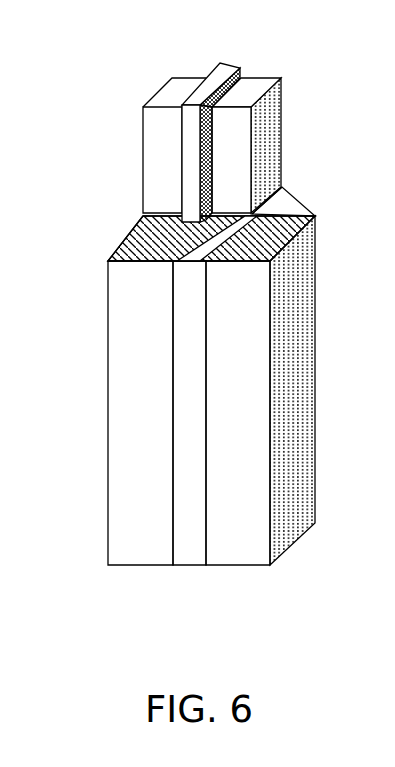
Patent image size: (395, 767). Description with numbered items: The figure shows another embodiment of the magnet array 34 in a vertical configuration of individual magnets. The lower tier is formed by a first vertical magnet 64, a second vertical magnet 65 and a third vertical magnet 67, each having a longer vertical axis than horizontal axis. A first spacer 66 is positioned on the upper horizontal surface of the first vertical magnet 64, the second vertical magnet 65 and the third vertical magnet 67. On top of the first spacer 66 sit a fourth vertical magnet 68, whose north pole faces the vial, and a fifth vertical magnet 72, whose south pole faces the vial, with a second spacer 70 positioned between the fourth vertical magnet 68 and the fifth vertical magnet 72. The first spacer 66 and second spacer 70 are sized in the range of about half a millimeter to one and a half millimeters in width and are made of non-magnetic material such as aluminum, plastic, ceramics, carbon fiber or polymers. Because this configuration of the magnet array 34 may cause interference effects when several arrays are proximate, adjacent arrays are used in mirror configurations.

The magnet array 34 is at (190, 402).
The first vertical magnet 64 is at (133, 547).
The second vertical magnet 65 is at (186, 547).
The first spacer 66 is at (298, 201).
The third vertical magnet 67 is at (231, 547).
The fourth vertical magnet 68 is at (268, 155).
The second spacer 70 is at (222, 63).
The fifth vertical magnet 72 is at (152, 145).